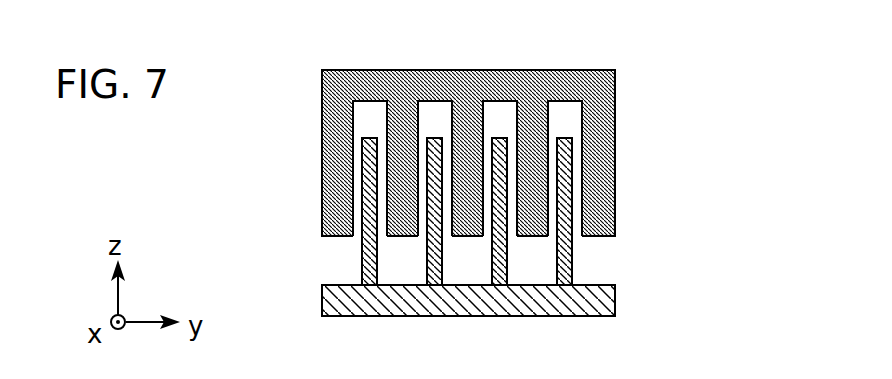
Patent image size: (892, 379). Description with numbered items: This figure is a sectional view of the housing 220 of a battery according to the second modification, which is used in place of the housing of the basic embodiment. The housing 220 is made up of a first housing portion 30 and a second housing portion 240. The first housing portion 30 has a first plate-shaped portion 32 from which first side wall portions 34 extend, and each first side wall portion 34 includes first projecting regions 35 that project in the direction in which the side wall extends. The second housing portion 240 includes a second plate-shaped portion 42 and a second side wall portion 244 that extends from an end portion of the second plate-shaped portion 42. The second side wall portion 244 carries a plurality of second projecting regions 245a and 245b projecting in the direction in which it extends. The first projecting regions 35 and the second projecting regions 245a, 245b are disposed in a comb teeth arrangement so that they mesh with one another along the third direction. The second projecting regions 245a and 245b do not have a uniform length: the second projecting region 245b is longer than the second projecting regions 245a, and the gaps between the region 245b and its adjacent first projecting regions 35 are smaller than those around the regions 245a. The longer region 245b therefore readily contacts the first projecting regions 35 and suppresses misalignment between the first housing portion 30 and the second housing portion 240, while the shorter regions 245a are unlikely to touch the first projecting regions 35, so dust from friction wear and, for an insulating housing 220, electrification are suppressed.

The housing 220 is at (250, 63).
The first housing portion 30 is at (512, 141).
The first plate-shaped portion 32 is at (593, 87).
The first side wall portion 34 is at (632, 110).
The first projecting region 35 is at (470, 147).
The second housing portion 240 is at (503, 227).
The second side wall portion 244 is at (476, 211).
The second projecting region 245a is at (372, 207).
The second projecting region 245b is at (423, 252).
The second plate-shaped portion 42 is at (598, 300).